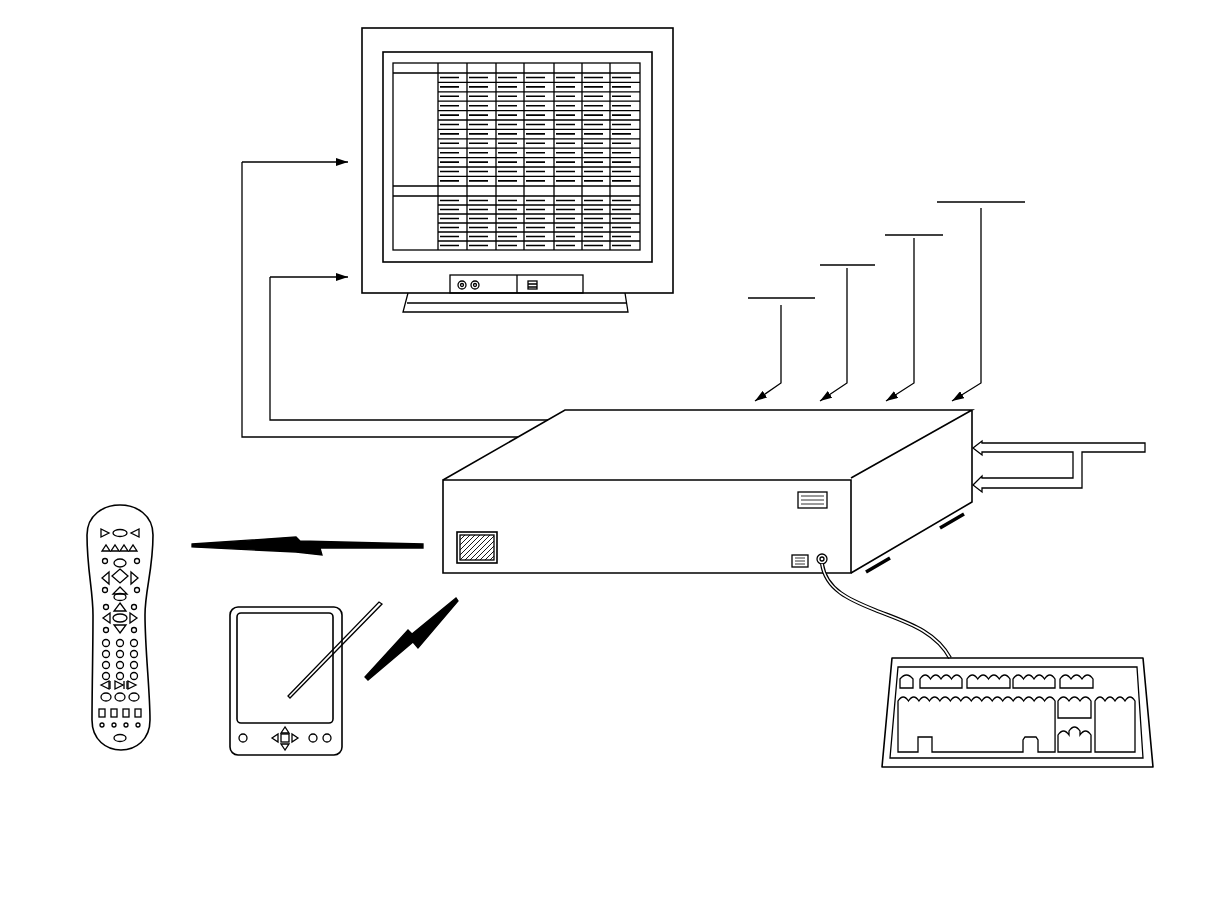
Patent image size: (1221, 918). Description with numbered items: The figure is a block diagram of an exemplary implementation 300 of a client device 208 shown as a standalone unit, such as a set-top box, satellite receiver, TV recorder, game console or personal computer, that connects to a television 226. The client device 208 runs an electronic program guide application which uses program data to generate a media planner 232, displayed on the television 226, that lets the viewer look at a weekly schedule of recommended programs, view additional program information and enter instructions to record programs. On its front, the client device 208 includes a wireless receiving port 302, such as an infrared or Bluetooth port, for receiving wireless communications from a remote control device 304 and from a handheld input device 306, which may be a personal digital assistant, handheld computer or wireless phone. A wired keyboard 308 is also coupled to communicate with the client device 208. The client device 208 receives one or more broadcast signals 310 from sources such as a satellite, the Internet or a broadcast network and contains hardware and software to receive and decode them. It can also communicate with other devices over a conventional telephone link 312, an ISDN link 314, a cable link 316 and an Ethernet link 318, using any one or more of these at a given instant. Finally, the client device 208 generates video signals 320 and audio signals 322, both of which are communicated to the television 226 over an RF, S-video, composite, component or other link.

The exemplary implementation 300 is at (1074, 86).
The television 226 is at (673, 173).
The media planner 232 is at (641, 117).
The video signal(s) 320 is at (327, 195).
The audio signal(s) 322 is at (327, 310).
The client device 208 is at (622, 408).
The wireless receiving port 302 is at (488, 532).
The conventional telephone link 312 is at (782, 260).
The ISDN link 314 is at (848, 227).
The cable link 316 is at (915, 195).
The Ethernet link 318 is at (980, 162).
The broadcast signals 310 is at (1038, 490).
The remote control device 304 is at (120, 505).
The handheld input device 306 is at (342, 707).
The wired keyboard 308 is at (1062, 658).